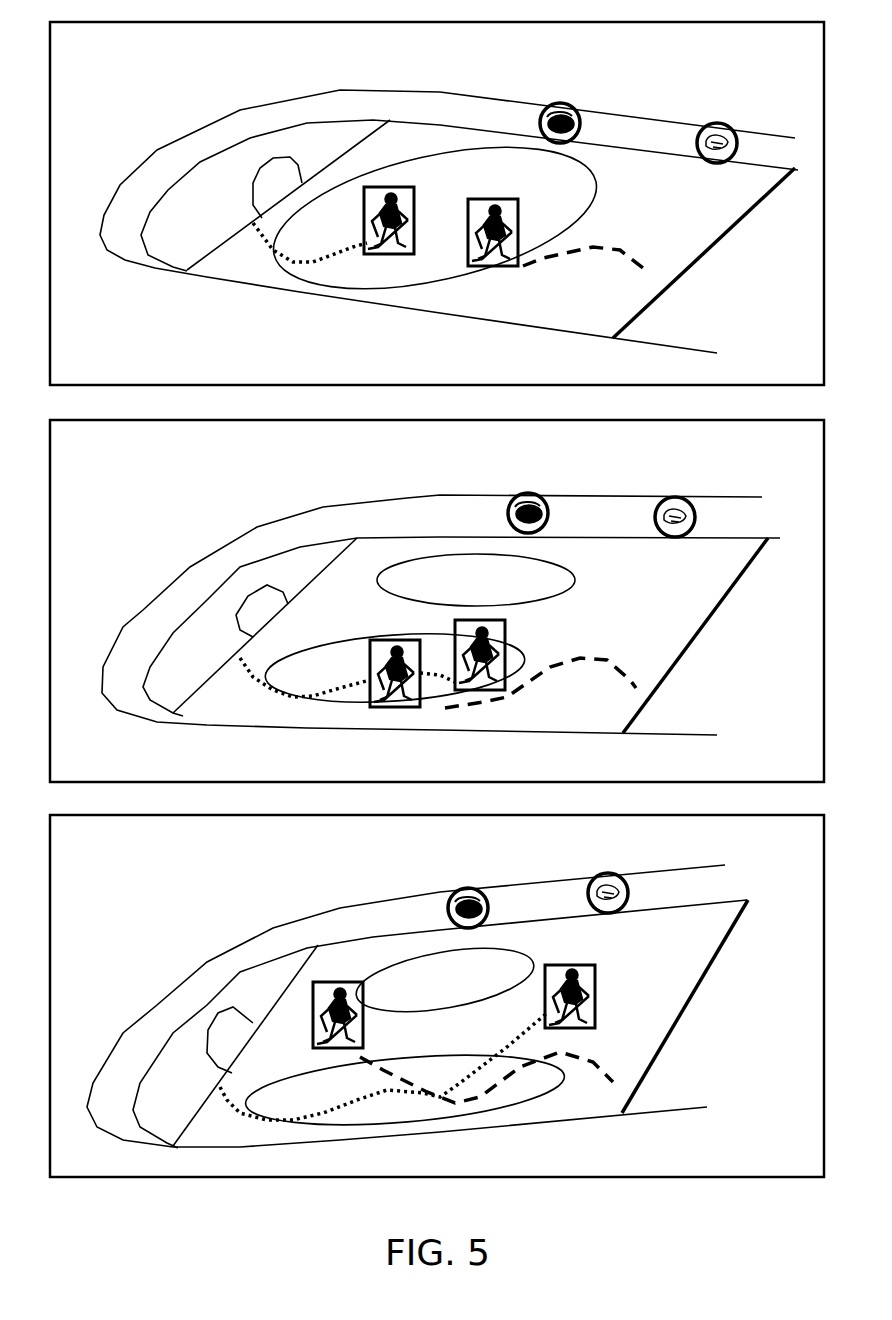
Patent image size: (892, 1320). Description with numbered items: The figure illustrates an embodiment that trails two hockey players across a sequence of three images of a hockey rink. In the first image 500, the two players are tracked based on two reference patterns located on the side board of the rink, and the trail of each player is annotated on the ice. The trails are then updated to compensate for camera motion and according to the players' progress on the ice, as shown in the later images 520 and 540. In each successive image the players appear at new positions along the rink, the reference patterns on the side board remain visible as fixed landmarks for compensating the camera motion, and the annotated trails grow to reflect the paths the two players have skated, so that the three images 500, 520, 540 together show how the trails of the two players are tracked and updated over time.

The image 500 is at (122, 57).
The image 520 is at (119, 456).
The image 540 is at (116, 849).